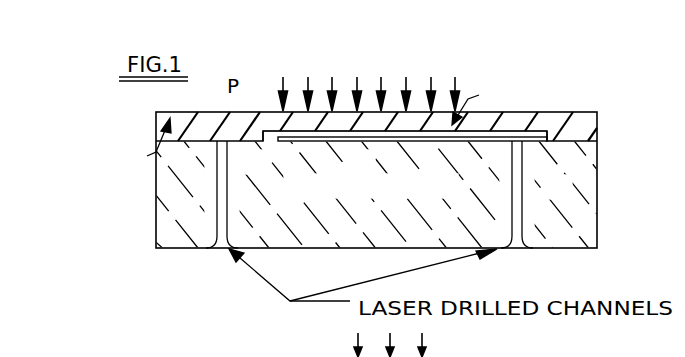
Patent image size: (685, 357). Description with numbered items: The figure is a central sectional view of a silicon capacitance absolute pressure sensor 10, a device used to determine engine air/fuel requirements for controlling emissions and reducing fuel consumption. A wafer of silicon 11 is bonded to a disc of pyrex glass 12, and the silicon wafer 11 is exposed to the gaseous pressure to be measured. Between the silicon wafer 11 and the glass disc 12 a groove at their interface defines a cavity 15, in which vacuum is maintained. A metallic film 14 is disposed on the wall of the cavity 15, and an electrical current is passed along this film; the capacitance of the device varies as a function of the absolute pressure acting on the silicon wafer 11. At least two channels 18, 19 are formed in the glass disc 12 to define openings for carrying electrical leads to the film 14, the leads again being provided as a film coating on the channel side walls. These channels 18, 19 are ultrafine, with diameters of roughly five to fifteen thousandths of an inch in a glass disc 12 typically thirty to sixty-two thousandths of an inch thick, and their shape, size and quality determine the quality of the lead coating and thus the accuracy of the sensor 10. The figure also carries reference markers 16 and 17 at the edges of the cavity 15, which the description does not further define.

The silicon capacitance absolute pressure sensor 10 is at (600, 146).
The silicon wafer 11 is at (563, 127).
The glass disc 12 is at (580, 187).
The metallic film 14 is at (337, 142).
The cavity 15 is at (436, 137).
The cavity edge seal 16 is at (548, 142).
The cavity edge 17 is at (263, 140).
The channel 18 is at (384, 111).
The channel 19 is at (518, 233).